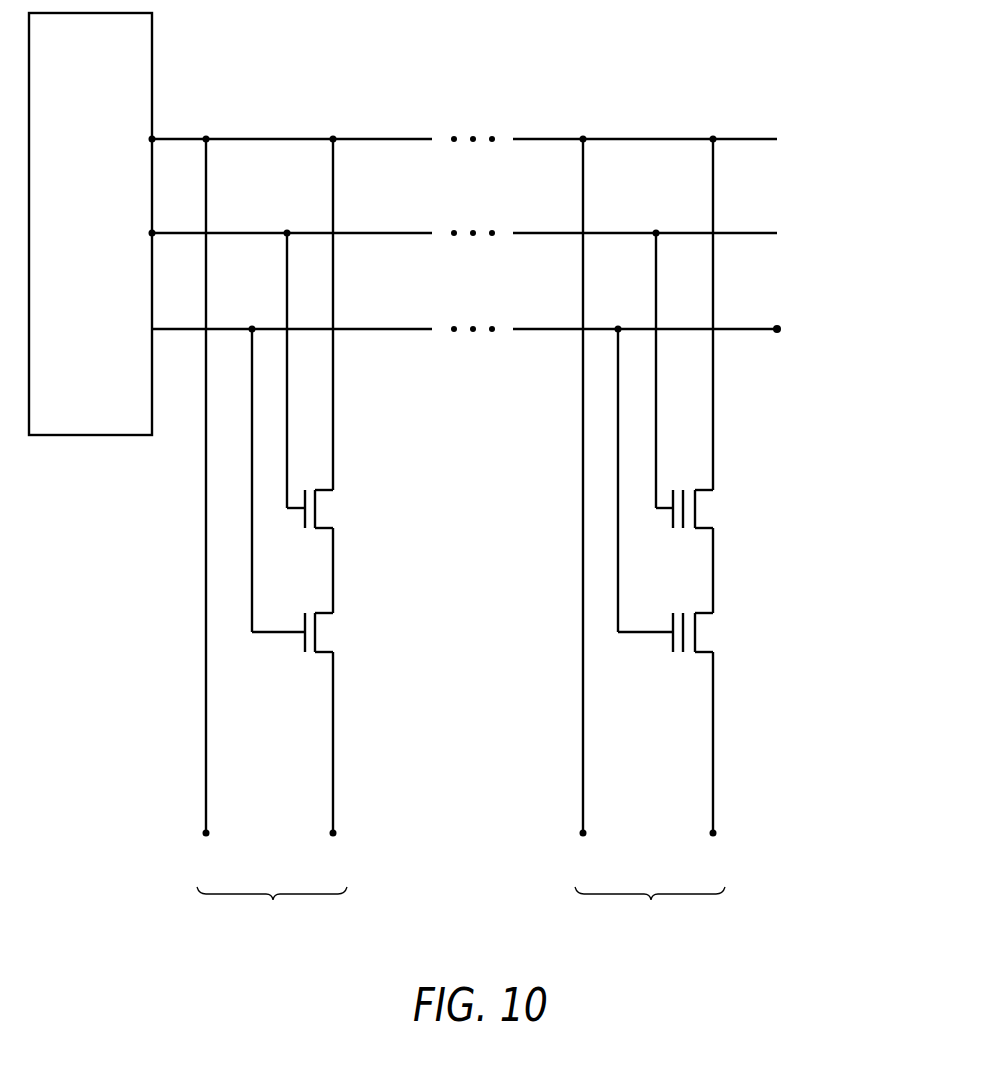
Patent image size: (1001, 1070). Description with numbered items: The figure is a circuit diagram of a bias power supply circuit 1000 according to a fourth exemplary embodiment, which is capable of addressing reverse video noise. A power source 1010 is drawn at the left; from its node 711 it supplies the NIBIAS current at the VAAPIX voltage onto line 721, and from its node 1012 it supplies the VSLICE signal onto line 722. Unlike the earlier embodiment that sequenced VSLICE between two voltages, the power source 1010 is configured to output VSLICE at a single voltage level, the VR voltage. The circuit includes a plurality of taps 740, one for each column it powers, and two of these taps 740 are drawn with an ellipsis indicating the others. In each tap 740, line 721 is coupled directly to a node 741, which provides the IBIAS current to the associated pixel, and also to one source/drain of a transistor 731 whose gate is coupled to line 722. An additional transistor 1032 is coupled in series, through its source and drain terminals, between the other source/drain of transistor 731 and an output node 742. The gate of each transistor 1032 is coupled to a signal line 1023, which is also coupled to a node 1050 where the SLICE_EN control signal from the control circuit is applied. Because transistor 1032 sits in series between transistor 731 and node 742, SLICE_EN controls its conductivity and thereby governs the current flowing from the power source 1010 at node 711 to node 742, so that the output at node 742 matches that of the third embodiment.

The bias power supply circuit 1000 is at (385, 55).
The power source 1010 is at (118, 127).
The node 711 is at (152, 139).
The node 1012 is at (152, 233).
The line 721 is at (765, 139).
The line 722 is at (765, 233).
The signal line 1023 is at (764, 329).
The node 1050 is at (780, 334).
The transistor 731 is at (318, 512).
The transistor 1032 is at (318, 636).
The node 741 is at (207, 836).
The node 742 is at (334, 836).
The tap 740 is at (461, 907).